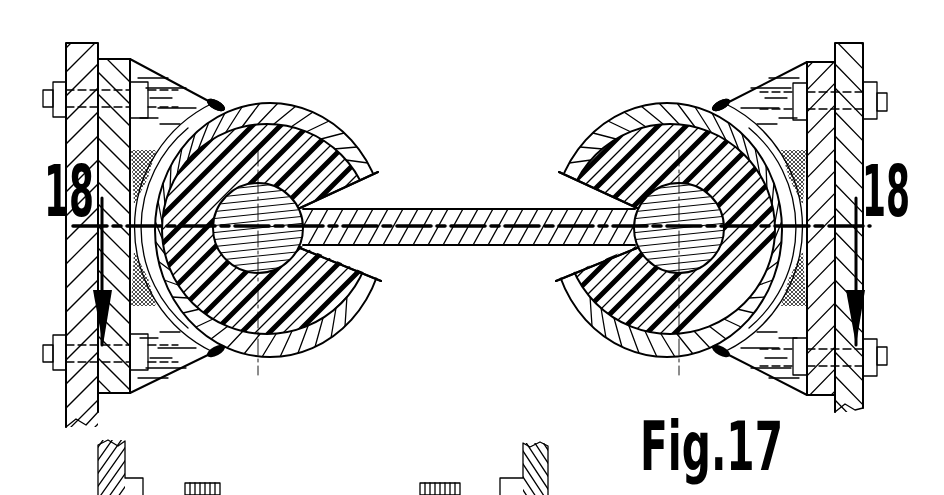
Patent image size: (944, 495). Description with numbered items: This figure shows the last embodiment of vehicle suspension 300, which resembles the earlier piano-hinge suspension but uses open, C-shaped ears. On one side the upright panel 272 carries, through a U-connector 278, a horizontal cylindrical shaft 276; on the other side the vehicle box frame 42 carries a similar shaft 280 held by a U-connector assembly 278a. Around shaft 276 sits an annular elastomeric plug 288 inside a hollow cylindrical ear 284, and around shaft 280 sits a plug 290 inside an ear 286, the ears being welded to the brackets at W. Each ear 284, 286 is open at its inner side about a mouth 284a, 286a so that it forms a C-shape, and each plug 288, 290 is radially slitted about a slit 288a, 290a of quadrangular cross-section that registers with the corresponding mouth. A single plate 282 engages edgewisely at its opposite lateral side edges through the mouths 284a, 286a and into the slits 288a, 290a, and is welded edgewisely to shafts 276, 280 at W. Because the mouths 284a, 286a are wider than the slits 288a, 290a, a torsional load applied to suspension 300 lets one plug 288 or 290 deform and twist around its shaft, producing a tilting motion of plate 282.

The vehicle suspension 300 is at (458, 102).
The vehicle box frame 42 is at (78, 44).
The U-connector assembly 278a is at (214, 100).
The shaft 280 is at (336, 137).
The cylindrical ear 284 is at (248, 112).
The elastomeric plug 288 is at (293, 148).
The mouth 284a is at (370, 182).
The slit 288a is at (323, 257).
The plate 282 is at (428, 208).
The upright panel 272 is at (847, 60).
The U-connector 278 is at (733, 100).
The cylindrical shaft 276 is at (632, 120).
The cylindrical ear 286 is at (606, 130).
The elastomeric plug 290 is at (678, 110).
The mouth 286a is at (562, 178).
The slit 290a is at (612, 259).
The weld W is at (217, 103).